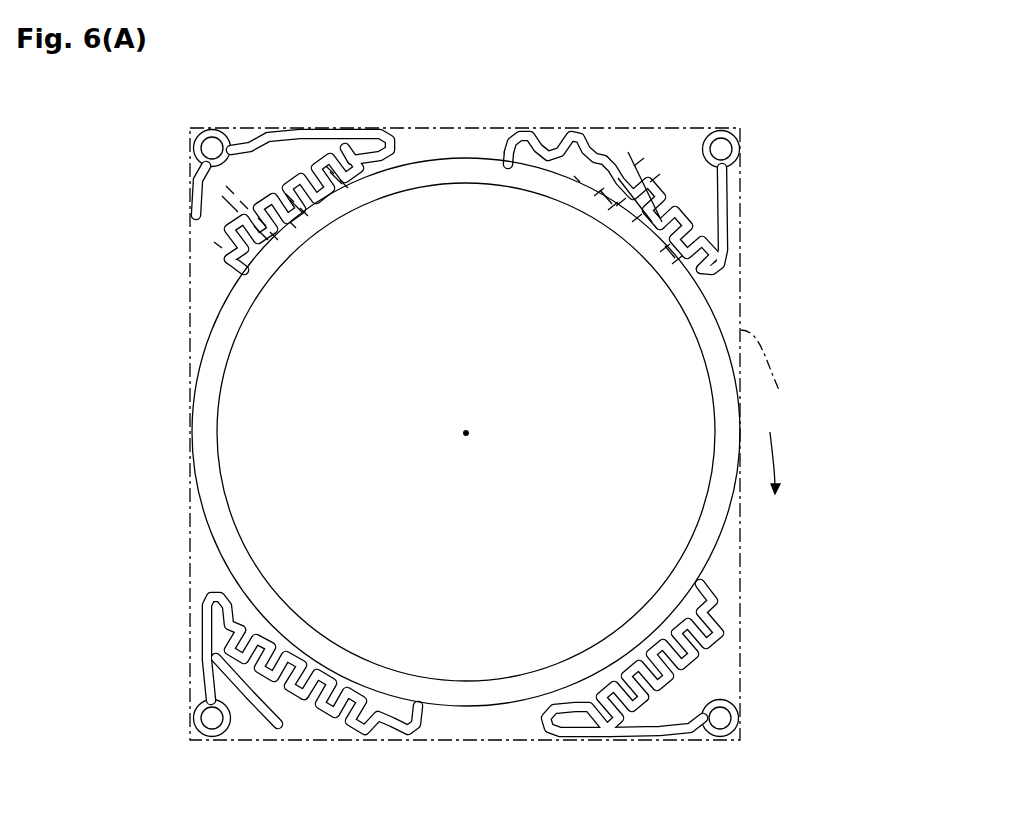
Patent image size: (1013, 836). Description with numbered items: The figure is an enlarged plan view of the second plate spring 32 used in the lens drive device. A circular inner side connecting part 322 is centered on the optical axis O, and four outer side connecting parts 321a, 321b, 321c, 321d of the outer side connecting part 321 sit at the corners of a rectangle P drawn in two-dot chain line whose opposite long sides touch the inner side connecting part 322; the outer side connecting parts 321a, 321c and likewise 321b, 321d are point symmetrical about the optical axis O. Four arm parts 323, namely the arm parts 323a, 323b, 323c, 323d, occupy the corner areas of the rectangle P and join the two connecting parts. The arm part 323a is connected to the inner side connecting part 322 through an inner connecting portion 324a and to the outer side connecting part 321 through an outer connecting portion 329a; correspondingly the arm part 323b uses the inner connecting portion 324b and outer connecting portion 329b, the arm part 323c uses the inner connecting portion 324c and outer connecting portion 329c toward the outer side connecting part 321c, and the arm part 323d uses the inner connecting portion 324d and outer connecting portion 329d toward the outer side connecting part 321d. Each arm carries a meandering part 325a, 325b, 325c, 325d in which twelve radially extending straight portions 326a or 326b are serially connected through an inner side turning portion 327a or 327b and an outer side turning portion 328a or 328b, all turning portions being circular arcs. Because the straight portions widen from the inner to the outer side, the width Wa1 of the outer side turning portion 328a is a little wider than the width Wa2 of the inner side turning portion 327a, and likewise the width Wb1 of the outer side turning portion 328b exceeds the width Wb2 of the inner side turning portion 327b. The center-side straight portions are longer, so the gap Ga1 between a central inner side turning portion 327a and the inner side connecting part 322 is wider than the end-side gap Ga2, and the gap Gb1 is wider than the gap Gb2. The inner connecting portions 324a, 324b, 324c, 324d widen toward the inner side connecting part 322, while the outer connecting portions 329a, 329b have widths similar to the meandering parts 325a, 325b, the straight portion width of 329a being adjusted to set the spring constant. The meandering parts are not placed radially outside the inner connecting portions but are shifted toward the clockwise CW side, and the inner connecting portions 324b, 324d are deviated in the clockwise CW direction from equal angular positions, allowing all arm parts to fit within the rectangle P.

The second plate spring 32 is at (479, 432).
The outer side connecting part 321 is at (793, 166).
The outer side connecting part 321a is at (740, 153).
The outer side connecting part 321b is at (212, 129).
The outer side connecting part 321c is at (212, 738).
The outer side connecting part 321d is at (721, 738).
The inner side connecting part 322 is at (690, 340).
The arm parts 323 is at (194, 208).
The arm part 323a is at (667, 169).
The arm part 323b is at (233, 218).
The arm part 323c is at (292, 715).
The arm part 323d is at (700, 696).
The inner connecting portion 324a is at (506, 150).
The inner connecting portion 324b is at (248, 272).
The inner connecting portion 324c is at (421, 718).
The inner connecting portion 324d is at (708, 598).
The meandering part 325a is at (703, 190).
The meandering part 325b is at (163, 182).
The meandering part 325c is at (302, 738).
The meandering part 325d is at (702, 724).
The straight portions 326a is at (588, 140).
The straight portions 326b is at (216, 246).
The inner side turning portion 327a is at (578, 180).
The inner side turning portion 327b is at (292, 226).
The outer side turning portion 328a is at (633, 160).
The outer side turning portion 328b is at (312, 148).
The outer connecting portion 329a is at (727, 180).
The outer connecting portion 329b is at (240, 146).
The outer connecting portion 329c is at (205, 692).
The outer connecting portion 329d is at (700, 733).
The optical axis O is at (466, 437).
The rectangle P is at (769, 370).
The clockwise direction CW is at (790, 463).
The width dimension of outer side turning portion Wa1 is at (658, 176).
The width dimension of inner side turning portion Wa2 is at (630, 220).
The width dimension of outer side turning portion Wb1 is at (222, 199).
The width dimension of inner side turning portion Wb2 is at (266, 238).
The gap space dimension Ga1 is at (604, 196).
The gap space dimension Ga2 is at (670, 252).
The gap space dimension Gb1 is at (300, 206).
The gap space dimension Gb2 is at (338, 180).